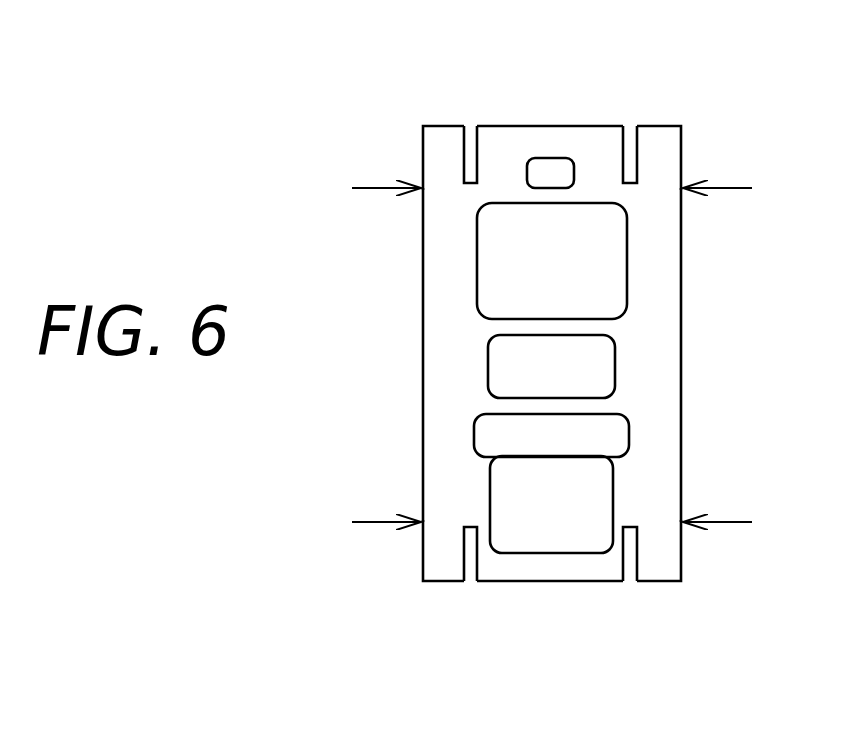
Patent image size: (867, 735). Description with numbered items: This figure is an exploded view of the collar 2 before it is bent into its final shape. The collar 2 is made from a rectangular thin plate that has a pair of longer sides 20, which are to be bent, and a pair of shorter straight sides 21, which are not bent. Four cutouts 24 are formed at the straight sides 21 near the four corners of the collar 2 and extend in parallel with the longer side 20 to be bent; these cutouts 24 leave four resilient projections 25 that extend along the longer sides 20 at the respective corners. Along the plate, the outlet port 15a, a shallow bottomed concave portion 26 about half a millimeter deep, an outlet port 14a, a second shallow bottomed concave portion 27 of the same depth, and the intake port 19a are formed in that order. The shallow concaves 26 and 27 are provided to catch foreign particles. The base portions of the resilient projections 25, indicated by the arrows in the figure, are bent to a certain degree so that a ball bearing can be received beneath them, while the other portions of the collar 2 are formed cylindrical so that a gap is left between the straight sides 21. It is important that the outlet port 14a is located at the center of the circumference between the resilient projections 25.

The collar 2 is at (539, 349).
The longer side 20 is at (552, 355).
The shorter straight side 21 is at (550, 358).
The cutout 24 is at (554, 371).
The resilient projection 25 is at (560, 359).
The concave portion 26 is at (472, 261).
The concave portion 27 is at (475, 452).
The outlet port 14a is at (637, 366).
The outlet port 15a is at (591, 97).
The intake port 19a is at (564, 573).